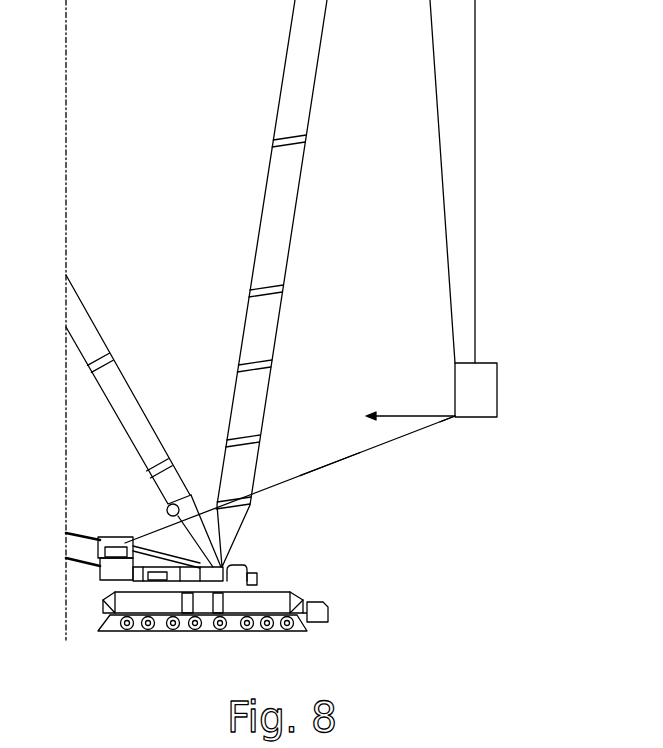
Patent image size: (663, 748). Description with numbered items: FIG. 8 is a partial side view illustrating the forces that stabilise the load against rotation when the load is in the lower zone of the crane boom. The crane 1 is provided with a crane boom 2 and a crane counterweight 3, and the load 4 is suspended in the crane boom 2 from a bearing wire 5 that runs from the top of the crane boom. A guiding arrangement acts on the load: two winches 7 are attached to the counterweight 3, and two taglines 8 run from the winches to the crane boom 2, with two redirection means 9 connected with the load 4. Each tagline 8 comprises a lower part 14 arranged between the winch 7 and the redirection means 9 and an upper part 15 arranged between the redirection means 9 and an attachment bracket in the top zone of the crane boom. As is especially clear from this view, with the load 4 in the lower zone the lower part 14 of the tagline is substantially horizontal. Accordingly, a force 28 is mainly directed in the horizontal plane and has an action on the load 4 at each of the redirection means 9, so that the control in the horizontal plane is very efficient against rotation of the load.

The crane 1 is at (115, 643).
The crane boom 2 is at (283, 77).
The crane counterweight 3 is at (100, 573).
The load 4 is at (498, 392).
The bearing wire 5 is at (476, 90).
The winch 7 is at (118, 540).
The tagline 8 is at (321, 473).
The redirection means 9 is at (456, 419).
The lower part 14 is at (380, 450).
The upper part 15 is at (438, 135).
The force 28 is at (418, 414).